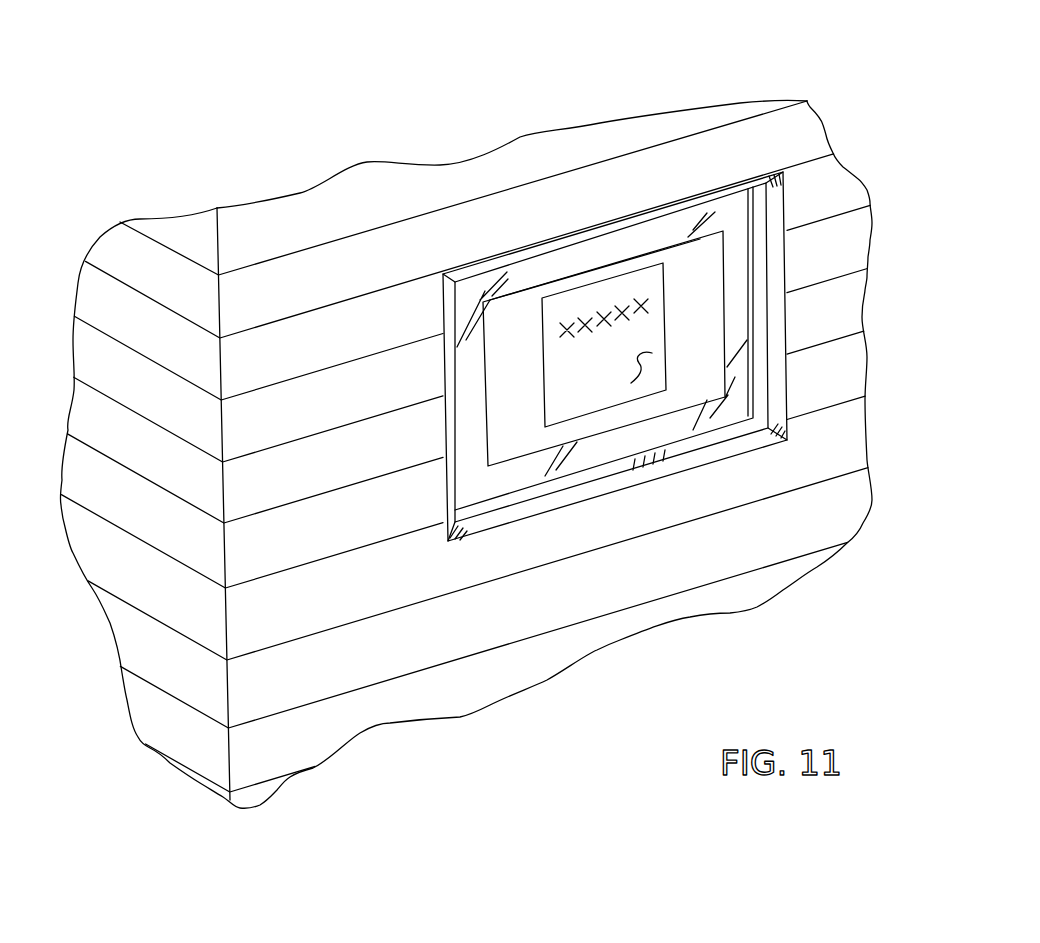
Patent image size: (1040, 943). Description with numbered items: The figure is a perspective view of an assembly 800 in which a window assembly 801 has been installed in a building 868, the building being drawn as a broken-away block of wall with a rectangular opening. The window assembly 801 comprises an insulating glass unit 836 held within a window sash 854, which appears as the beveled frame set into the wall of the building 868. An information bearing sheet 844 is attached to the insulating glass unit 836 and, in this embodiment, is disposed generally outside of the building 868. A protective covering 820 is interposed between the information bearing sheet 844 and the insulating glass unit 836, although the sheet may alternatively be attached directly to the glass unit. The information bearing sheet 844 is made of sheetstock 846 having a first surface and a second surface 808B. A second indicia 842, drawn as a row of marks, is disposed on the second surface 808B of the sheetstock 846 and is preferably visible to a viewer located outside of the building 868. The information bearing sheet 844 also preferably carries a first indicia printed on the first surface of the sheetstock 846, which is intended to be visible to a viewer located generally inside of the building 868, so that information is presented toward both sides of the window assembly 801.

The assembly 800 is at (752, 685).
The window assembly 801 is at (722, 460).
The second surface 808B is at (641, 368).
The protective covering 820 is at (568, 277).
The insulating glass unit 836 is at (750, 332).
The second indicia 842 is at (627, 307).
The information bearing sheet 844 is at (666, 309).
The sheetstock 846 is at (537, 305).
The window sash 854 is at (767, 267).
The building 868 is at (490, 707).